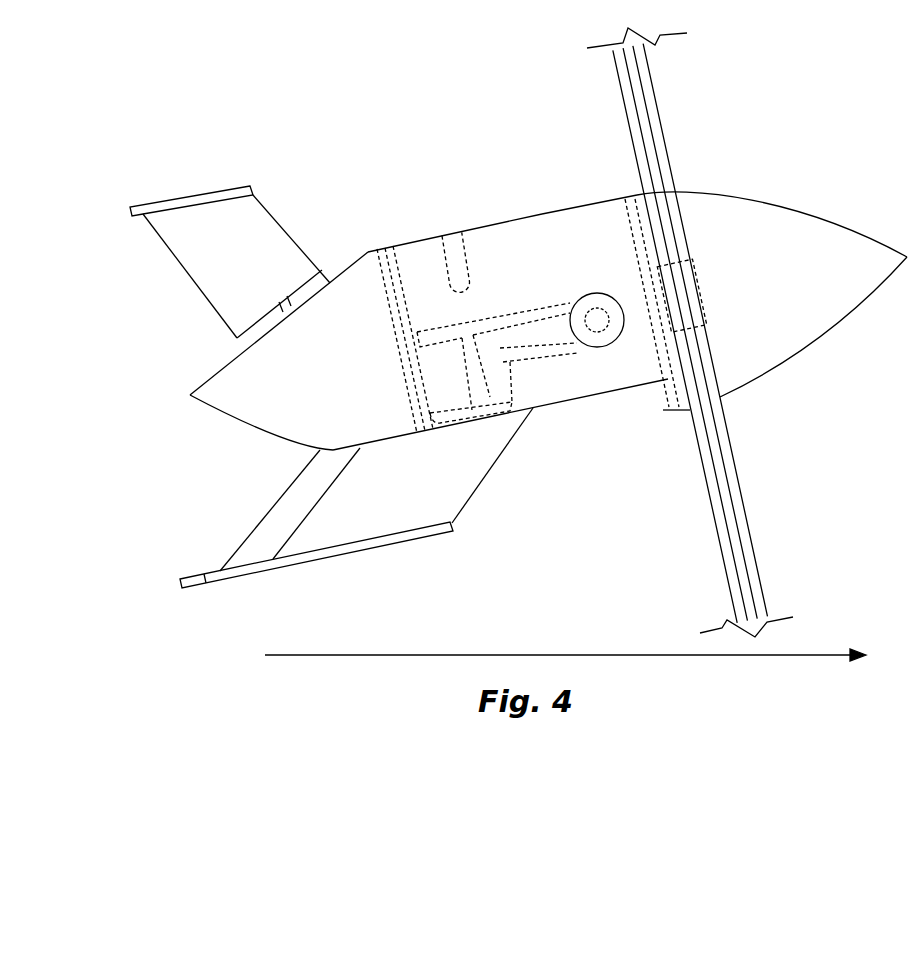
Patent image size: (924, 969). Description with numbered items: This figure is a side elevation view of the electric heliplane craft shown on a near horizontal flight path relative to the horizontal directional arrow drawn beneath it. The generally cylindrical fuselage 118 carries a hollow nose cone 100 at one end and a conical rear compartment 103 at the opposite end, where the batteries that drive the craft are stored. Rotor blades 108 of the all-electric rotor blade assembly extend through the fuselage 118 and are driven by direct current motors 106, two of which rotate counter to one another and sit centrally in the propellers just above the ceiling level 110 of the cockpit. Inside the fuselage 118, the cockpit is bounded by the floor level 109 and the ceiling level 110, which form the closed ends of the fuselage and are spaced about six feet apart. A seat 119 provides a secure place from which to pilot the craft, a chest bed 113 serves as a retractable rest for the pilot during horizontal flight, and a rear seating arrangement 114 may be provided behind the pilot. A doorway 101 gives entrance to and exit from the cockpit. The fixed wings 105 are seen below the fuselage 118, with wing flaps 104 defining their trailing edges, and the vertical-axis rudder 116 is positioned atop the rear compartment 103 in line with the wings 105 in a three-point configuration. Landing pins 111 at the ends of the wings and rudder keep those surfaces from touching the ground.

The nose cone 100 is at (782, 208).
The doorway 101 is at (600, 397).
The rear compartment 103 is at (222, 363).
The wing flaps 104 is at (278, 502).
The fixed wings 105 is at (495, 455).
The direct current motors 106 is at (700, 297).
The rotor blades 108 is at (652, 80).
The floor level 109 is at (393, 327).
The ceiling level 110 is at (670, 410).
The landing pins 111 is at (180, 580).
The chest bed 113 is at (553, 353).
The rear seating arrangement 114 is at (467, 267).
The rudder 116 is at (178, 262).
The fuselage 118 is at (542, 212).
The seat 119 is at (523, 307).